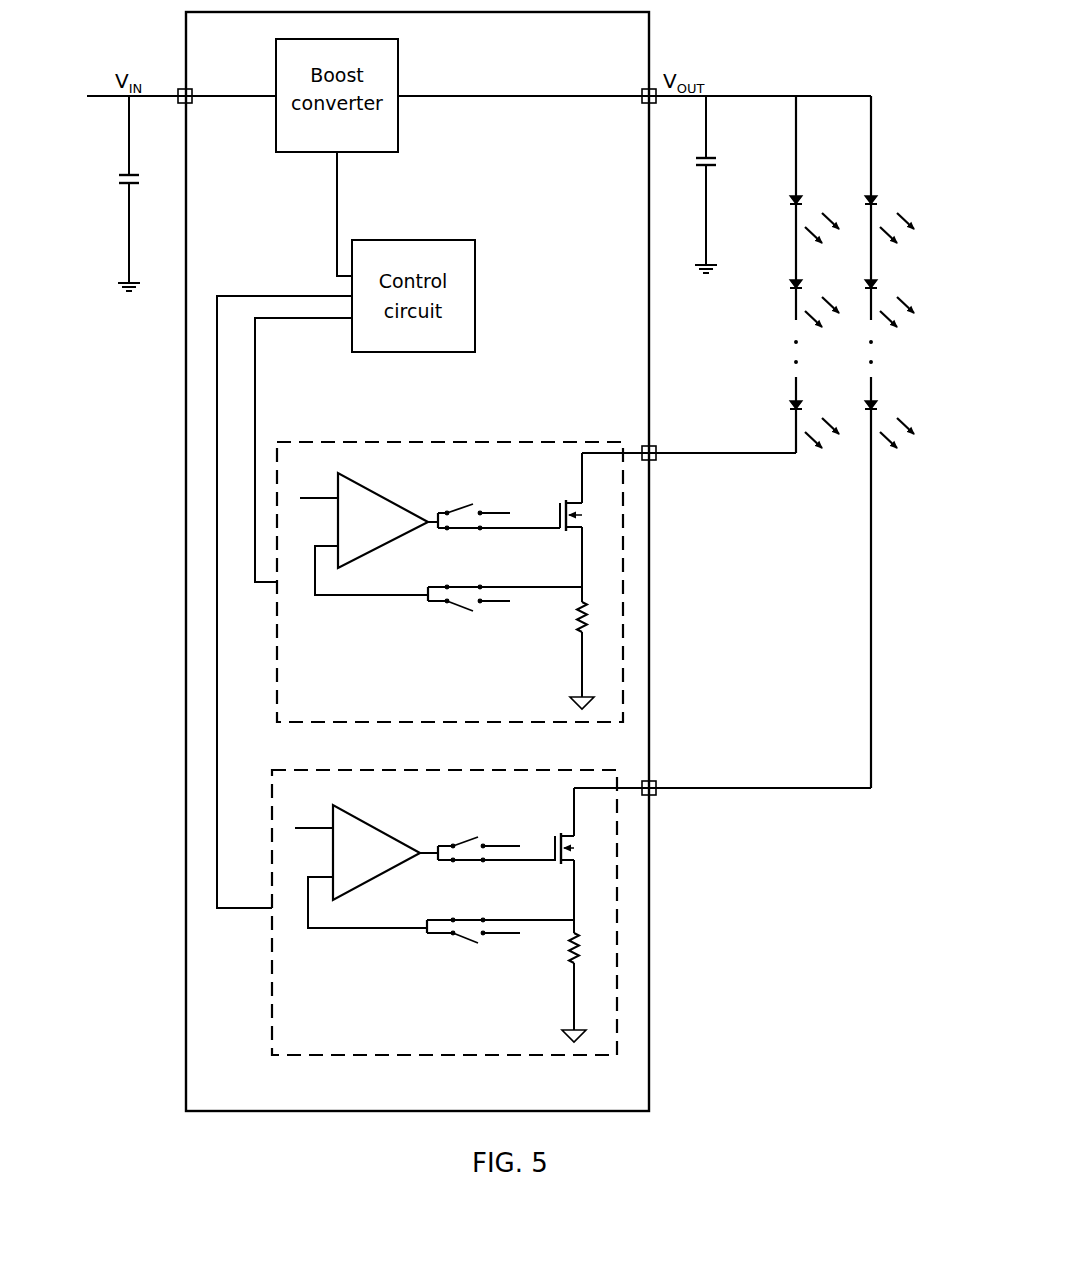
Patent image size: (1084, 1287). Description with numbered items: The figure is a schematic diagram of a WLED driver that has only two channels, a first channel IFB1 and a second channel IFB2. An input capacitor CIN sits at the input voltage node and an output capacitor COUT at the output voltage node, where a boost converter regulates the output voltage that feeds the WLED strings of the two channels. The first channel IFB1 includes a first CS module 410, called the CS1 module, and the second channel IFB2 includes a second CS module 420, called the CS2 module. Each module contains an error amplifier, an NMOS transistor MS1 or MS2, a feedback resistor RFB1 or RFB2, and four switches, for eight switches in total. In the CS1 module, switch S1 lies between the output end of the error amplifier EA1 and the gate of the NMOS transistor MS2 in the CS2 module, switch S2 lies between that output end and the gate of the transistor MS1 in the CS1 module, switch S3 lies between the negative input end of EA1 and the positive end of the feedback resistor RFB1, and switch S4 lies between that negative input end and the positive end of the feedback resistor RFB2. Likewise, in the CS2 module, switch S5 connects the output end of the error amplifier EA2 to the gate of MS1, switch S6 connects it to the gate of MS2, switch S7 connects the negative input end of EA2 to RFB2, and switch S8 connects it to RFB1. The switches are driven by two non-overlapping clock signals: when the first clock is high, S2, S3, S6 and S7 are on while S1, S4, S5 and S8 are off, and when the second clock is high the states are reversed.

The first CS module 410 is at (518, 582).
The second CS module 420 is at (517, 912).
The input capacitor CIN is at (144, 193).
The output capacitor COUT is at (729, 184).
The first channel IFB1 is at (689, 439).
The second channel IFB2 is at (722, 774).
The element EA1 is at (383, 520).
The element EA2 is at (376, 852).
The first sink transistor MS1 is at (561, 527).
The second sink transistor MS2 is at (552, 860).
The feedback resistor RFB1 is at (558, 648).
The feedback resistor RFB2 is at (551, 980).
The switch S1 is at (470, 503).
The switch S2 is at (464, 535).
The switch S3 is at (468, 577).
The switch S4 is at (470, 610).
The switch S5 is at (467, 836).
The switch S6 is at (470, 865).
The switch S7 is at (470, 912).
The switch S8 is at (471, 942).